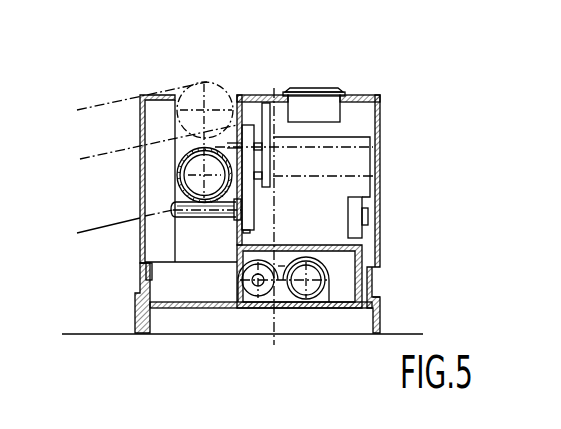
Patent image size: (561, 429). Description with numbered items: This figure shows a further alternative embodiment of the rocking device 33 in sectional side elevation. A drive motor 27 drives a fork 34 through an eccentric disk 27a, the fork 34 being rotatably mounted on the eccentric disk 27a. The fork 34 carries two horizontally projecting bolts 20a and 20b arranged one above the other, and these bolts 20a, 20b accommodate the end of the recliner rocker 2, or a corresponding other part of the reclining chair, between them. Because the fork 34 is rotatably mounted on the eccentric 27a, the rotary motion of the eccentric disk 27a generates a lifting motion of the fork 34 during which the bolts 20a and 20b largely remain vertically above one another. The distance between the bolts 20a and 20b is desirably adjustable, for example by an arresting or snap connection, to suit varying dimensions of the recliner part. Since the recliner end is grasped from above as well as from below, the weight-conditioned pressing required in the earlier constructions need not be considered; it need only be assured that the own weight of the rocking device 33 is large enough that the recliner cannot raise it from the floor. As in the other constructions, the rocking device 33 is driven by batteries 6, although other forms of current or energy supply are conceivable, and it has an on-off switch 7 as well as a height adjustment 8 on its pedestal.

The pivot axis 2 is at (105, 192).
The batteries 6 is at (312, 292).
The on-off switch 7 is at (318, 90).
The height adjustment 8 is at (381, 300).
The bolt 20a is at (173, 137).
The bolt 20b is at (183, 221).
The drive motor 27 is at (357, 162).
The eccentric disk 27a is at (263, 118).
The rocking device 33 is at (376, 89).
The fork 34 is at (248, 235).